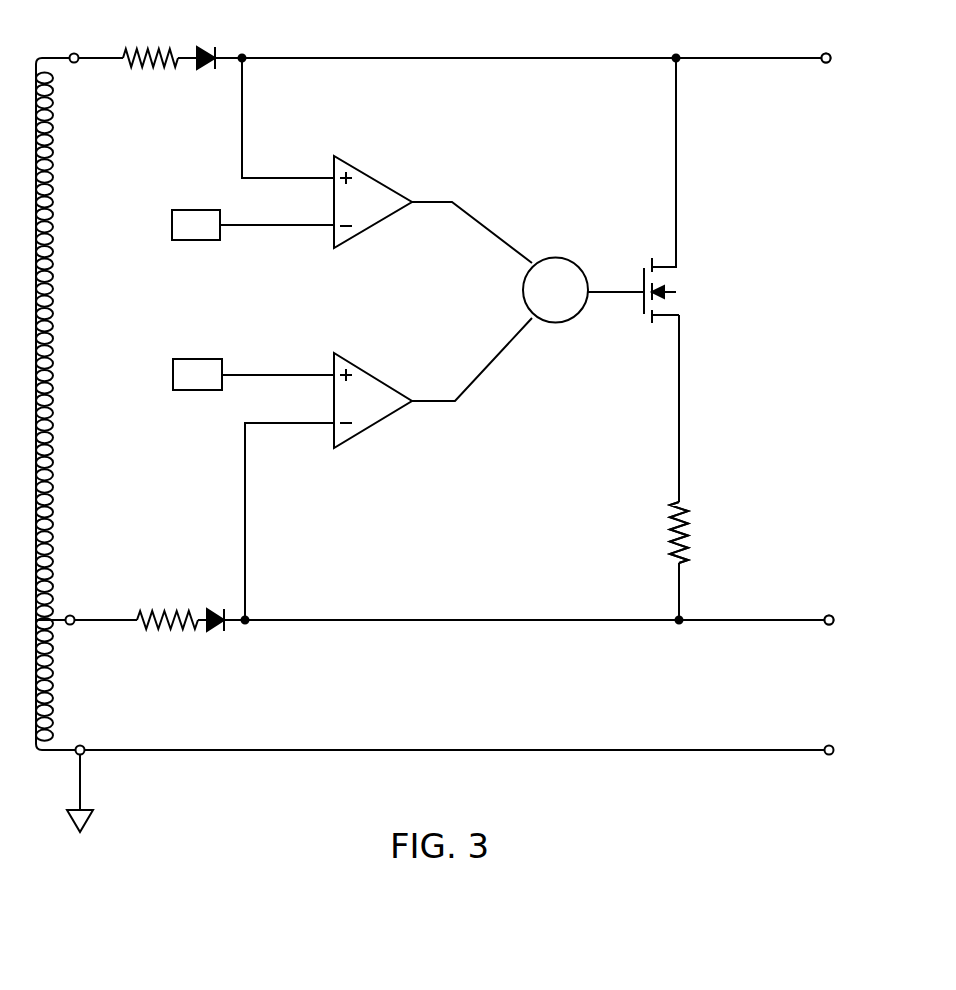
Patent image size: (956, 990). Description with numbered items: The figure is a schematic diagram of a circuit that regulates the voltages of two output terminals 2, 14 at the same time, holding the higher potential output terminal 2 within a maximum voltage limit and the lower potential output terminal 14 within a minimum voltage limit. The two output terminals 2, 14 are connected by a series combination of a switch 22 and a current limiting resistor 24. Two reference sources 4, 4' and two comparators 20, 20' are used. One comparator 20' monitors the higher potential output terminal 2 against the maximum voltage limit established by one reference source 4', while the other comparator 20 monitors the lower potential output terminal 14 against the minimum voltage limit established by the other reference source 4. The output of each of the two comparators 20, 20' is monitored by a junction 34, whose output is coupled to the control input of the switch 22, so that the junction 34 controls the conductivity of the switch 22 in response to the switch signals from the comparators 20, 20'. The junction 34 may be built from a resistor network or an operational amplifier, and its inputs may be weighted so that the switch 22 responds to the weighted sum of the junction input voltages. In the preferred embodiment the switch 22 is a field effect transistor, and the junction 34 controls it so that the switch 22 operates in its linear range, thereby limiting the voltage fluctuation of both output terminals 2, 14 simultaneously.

The output terminal 2 is at (826, 52).
The reference source 4 is at (197, 354).
The reference source 4' is at (196, 244).
The output terminal 14 is at (829, 626).
The comparator 20 is at (382, 393).
The comparator 20' is at (390, 192).
The switch 22 is at (652, 316).
The current limiting resistor 24 is at (672, 533).
The junction 34 is at (565, 323).